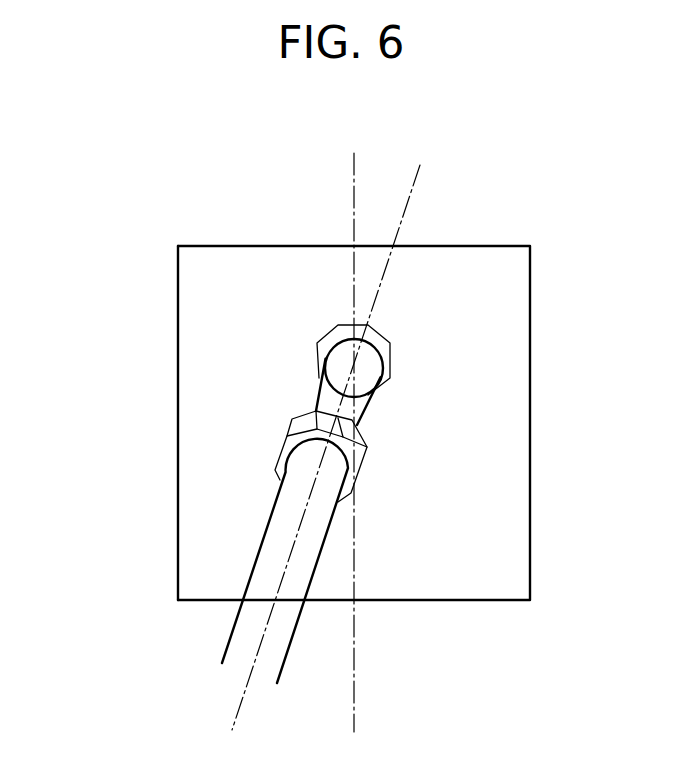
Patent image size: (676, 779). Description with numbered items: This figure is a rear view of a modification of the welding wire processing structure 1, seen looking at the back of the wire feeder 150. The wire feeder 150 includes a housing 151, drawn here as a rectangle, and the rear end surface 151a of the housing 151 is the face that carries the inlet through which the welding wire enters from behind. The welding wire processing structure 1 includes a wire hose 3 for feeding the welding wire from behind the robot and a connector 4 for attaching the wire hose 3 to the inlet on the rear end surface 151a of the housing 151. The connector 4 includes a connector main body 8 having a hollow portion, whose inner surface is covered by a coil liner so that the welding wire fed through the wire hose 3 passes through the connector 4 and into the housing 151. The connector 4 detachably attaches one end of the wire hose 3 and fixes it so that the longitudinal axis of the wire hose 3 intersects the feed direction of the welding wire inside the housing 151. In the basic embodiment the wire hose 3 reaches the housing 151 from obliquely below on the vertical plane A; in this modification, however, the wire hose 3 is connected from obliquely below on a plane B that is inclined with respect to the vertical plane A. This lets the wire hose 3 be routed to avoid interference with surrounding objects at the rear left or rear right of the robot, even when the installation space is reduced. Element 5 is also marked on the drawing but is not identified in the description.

The wire feeder 150 is at (254, 228).
The housing 151 is at (466, 246).
The rear end surface 151a is at (200, 413).
The welding wire processing structure 1 is at (460, 412).
The wire hose 3 is at (216, 631).
The connector 4 is at (410, 326).
The pipe 5 is at (271, 516).
The connector main body 8 is at (340, 368).
The vertical plane A is at (354, 181).
The inclined plane B is at (238, 712).